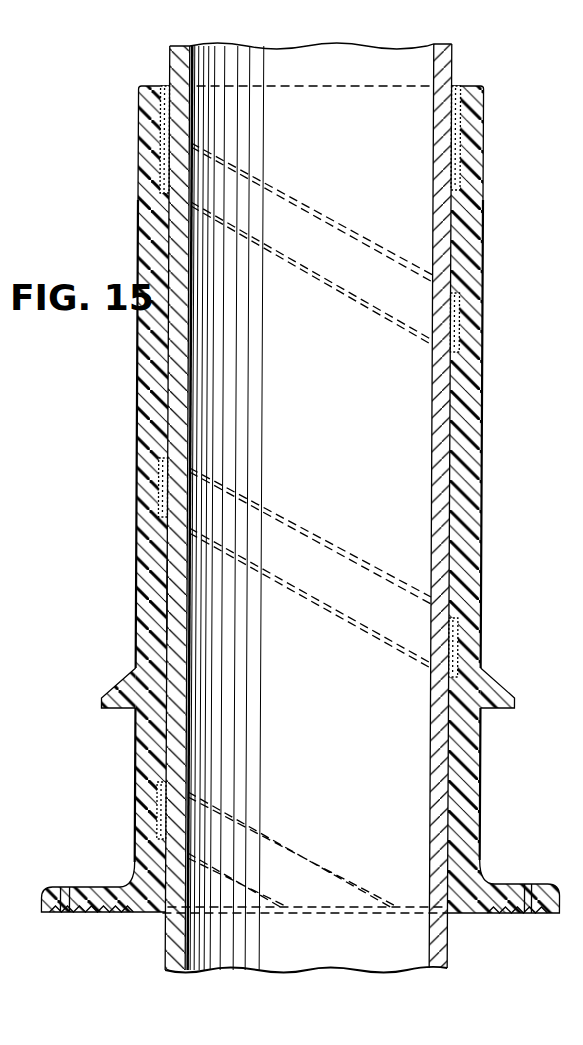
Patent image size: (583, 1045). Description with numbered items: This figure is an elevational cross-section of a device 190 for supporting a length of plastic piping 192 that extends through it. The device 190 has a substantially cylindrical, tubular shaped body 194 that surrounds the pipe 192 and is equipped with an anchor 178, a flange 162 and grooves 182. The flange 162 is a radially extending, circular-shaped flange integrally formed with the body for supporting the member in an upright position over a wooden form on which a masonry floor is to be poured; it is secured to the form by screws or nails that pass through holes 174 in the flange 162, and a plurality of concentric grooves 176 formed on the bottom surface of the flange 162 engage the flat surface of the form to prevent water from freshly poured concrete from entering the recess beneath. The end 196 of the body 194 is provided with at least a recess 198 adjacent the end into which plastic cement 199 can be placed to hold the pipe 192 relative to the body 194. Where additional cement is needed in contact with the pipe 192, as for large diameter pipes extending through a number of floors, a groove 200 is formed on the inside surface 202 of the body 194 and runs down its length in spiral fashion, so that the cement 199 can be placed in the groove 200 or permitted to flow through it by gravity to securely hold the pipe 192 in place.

The device 190 is at (113, 252).
The plastic piping 192 is at (445, 75).
The tubular shaped body 194 is at (468, 446).
The end 196 is at (478, 150).
The recess 198 is at (160, 112).
The plastic cement 199 is at (165, 152).
The groove 200 is at (160, 465).
The inside surface 202 is at (172, 598).
The grooves 182 is at (483, 520).
The anchor 178 is at (497, 690).
The flange 162 is at (112, 886).
The holes 174 is at (78, 890).
The concentric grooves 176 is at (112, 912).